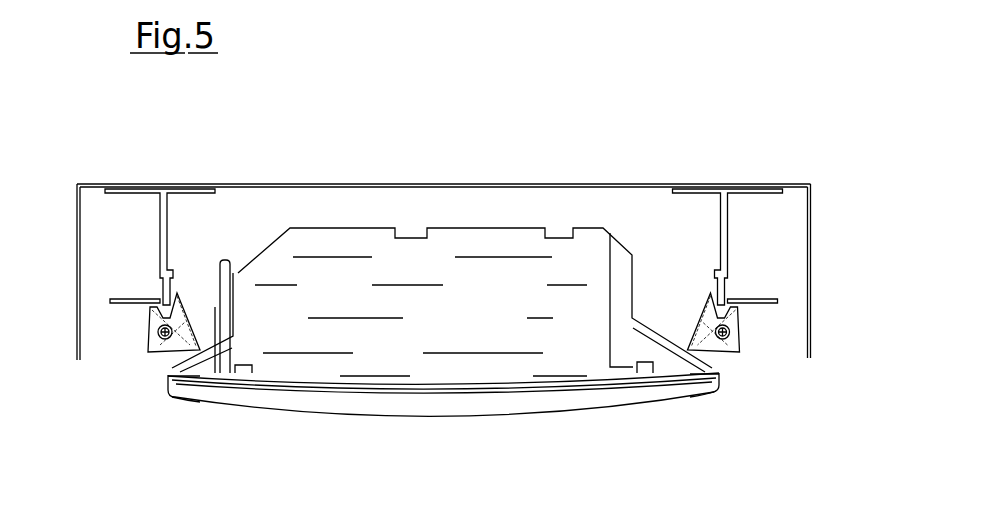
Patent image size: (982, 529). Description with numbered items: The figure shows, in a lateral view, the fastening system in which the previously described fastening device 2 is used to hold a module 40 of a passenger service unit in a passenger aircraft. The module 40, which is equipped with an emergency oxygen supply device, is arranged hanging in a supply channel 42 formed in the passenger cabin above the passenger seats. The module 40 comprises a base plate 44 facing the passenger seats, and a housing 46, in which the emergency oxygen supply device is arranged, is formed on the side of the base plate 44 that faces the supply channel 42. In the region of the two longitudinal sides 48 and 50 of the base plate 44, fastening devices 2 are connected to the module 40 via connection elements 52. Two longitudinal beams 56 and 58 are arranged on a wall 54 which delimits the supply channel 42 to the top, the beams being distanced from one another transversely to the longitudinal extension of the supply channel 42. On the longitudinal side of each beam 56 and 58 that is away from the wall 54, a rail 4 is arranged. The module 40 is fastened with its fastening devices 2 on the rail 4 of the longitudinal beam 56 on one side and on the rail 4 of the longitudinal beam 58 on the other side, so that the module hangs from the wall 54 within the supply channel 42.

The fastening device 2 is at (146, 352).
The rail 4 is at (164, 312).
The module 40 is at (342, 417).
The supply channel 42 is at (633, 210).
The base plate 44 is at (595, 398).
The housing 46 is at (513, 315).
The longitudinal side 48 is at (167, 386).
The longitudinal side 50 is at (722, 380).
The connection element 52 is at (203, 335).
The wall 54 is at (500, 183).
The longitudinal beam 56 is at (162, 245).
The longitudinal beam 58 is at (730, 223).